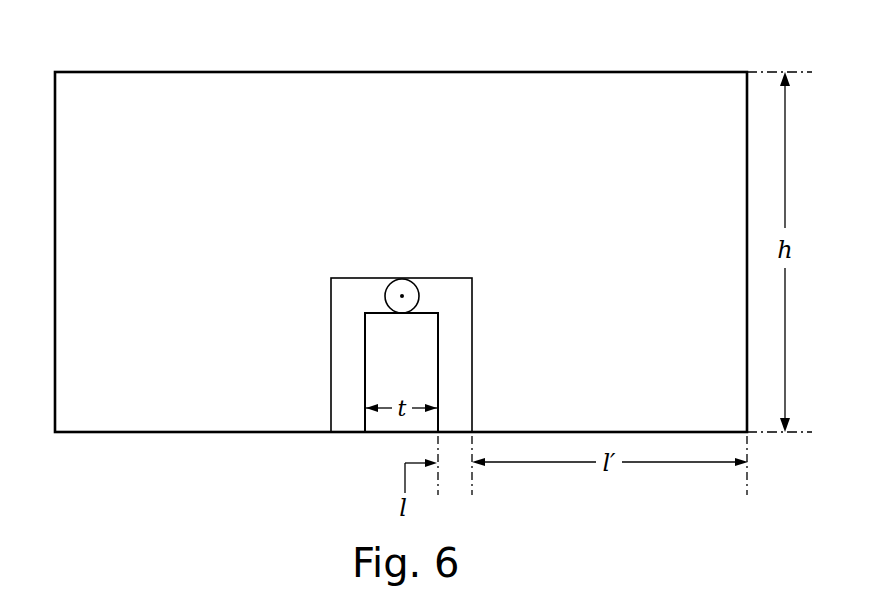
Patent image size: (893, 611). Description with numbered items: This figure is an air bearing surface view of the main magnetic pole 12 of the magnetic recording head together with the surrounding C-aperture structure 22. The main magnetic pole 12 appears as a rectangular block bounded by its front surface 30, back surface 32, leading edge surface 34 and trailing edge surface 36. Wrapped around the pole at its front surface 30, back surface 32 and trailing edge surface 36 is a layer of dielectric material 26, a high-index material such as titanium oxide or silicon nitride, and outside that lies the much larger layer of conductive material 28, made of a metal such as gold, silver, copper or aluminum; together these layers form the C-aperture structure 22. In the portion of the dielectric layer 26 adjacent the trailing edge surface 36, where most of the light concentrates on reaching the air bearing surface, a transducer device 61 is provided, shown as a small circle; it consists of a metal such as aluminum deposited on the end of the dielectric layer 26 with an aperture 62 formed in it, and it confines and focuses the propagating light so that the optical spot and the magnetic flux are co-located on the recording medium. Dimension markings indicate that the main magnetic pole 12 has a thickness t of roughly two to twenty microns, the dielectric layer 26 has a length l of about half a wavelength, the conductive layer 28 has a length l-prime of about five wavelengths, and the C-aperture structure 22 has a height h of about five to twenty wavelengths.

The C-aperture structure 22 is at (650, 48).
The layer of conductive material 28 is at (173, 158).
The layer of dielectric material 26 is at (463, 330).
The main magnetic pole 12 is at (418, 370).
The transducer device 61 is at (403, 270).
The aperture 62 is at (405, 296).
The trailing edge surface 36 is at (373, 302).
The front surface 30 is at (356, 358).
The back surface 32 is at (448, 363).
The leading edge surface 34 is at (378, 446).